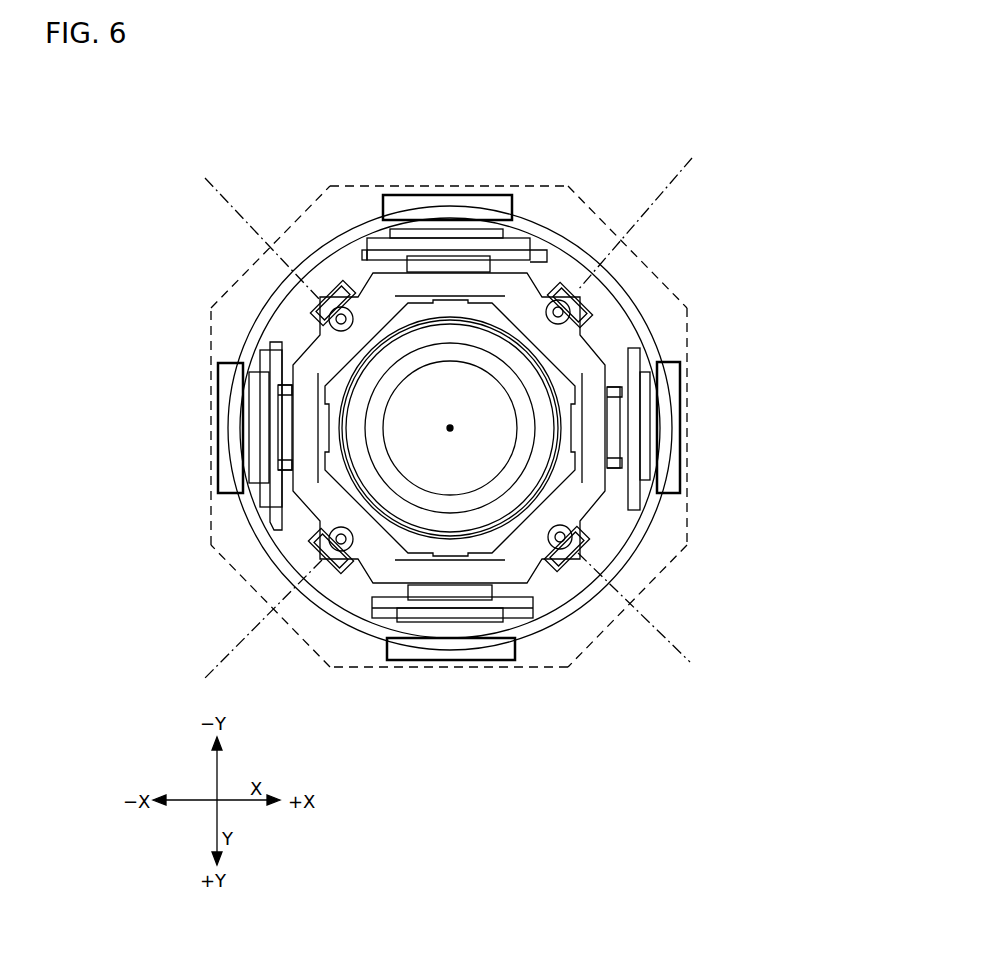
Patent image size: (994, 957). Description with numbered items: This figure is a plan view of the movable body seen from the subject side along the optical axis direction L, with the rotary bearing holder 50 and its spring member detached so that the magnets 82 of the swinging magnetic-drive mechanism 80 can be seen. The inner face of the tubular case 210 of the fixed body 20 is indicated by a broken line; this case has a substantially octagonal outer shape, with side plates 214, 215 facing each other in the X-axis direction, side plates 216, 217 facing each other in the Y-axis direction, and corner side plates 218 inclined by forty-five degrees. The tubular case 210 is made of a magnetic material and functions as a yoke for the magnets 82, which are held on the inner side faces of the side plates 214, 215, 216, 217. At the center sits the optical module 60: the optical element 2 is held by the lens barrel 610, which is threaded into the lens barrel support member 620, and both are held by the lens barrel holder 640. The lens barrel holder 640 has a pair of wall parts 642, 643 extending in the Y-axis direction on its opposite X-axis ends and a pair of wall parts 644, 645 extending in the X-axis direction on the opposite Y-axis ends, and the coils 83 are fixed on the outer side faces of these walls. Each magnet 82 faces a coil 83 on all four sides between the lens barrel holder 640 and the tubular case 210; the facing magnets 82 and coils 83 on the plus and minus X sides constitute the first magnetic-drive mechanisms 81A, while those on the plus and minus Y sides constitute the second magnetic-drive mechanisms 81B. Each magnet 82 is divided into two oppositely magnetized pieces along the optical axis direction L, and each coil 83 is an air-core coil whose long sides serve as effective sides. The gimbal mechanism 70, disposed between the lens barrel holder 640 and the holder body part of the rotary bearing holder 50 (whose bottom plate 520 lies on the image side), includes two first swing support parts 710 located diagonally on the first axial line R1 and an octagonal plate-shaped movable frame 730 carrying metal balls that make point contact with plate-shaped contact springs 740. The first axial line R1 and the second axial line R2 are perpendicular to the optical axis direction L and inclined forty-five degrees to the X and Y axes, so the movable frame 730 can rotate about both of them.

The optical element 2 is at (461, 468).
The optical axis direction L is at (452, 425).
The fixed body 20 is at (479, 429).
The rotary bearing holder 50 is at (513, 428).
The optical module 60 is at (280, 546).
The gimbal mechanism 70 is at (493, 423).
The swinging magnetic-drive mechanism 80 is at (443, 428).
The first magnetic-drive mechanism 81A is at (150, 383).
The second magnetic-drive mechanism 81B is at (427, 118).
The magnet 82 is at (405, 208).
The coil 83 is at (432, 240).
The tubular case 210 is at (479, 429).
The side plate 214 is at (688, 515).
The side plate 215 is at (210, 510).
The side plate 216 is at (545, 672).
The side plate 217 is at (500, 188).
The side plate 218 is at (322, 665).
The bottom plate 520 is at (665, 507).
The lens barrel 610 is at (345, 355).
The lens barrel support member 620 is at (367, 387).
The lens barrel holder 640 is at (366, 300).
The wall part 642 is at (650, 522).
The wall part 643 is at (262, 378).
The wall part 644 is at (535, 598).
The wall part 645 is at (368, 252).
The first swing support part 710 is at (590, 300).
The movable frame 730 is at (600, 362).
The contact spring 740 is at (323, 297).
The first axial line R1 is at (684, 176).
The second axial line R2 is at (690, 662).